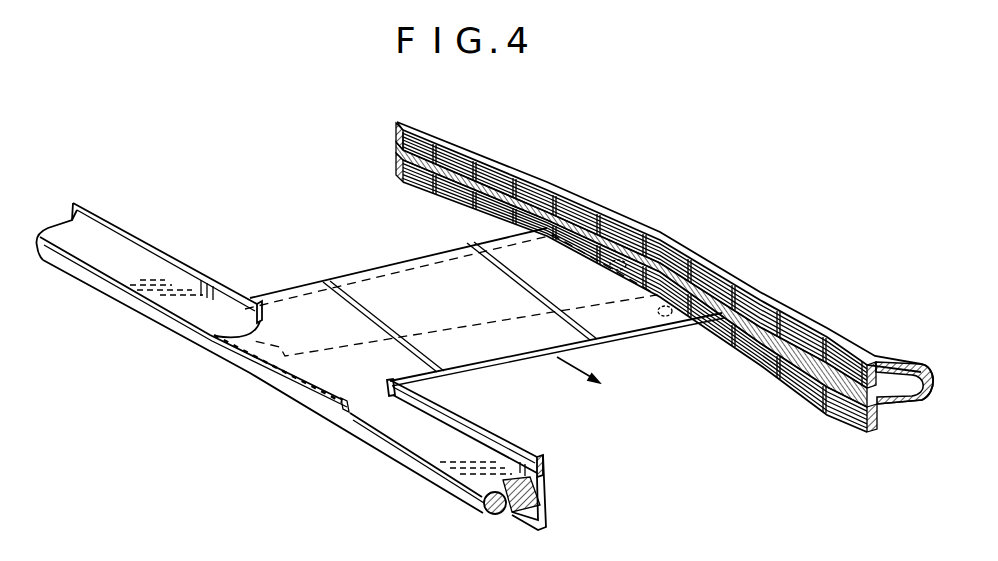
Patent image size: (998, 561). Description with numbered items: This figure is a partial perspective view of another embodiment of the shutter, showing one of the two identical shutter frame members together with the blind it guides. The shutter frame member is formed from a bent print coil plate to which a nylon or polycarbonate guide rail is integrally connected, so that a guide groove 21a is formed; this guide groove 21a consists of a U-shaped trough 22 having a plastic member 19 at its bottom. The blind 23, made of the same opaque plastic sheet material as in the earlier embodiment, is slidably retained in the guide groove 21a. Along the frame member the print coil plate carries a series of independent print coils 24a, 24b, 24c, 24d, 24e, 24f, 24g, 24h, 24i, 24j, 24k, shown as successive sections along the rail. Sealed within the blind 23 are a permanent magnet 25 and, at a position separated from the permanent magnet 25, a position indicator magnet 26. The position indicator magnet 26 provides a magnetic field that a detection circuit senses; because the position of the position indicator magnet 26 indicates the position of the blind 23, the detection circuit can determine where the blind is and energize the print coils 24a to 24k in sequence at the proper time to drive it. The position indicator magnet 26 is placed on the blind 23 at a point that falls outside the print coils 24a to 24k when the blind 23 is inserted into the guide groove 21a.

The plastic member 19 is at (927, 386).
The guide groove 21a is at (903, 395).
The U-shaped trough 22 is at (893, 373).
The blind 23 is at (512, 348).
The print coil 24a is at (415, 135).
The print coil 24b is at (458, 157).
The print coil 24c is at (498, 172).
The print coil 24d is at (539, 190).
The print coil 24e is at (582, 212).
The print coil 24f is at (622, 233).
The print coil 24g is at (662, 257).
The print coil 24h is at (705, 282).
The print coil 24i is at (747, 303).
The print coil 24j is at (795, 337).
The print coil 24k is at (849, 363).
The permanent magnet 25 is at (390, 280).
The position indicator magnet 26 is at (664, 318).